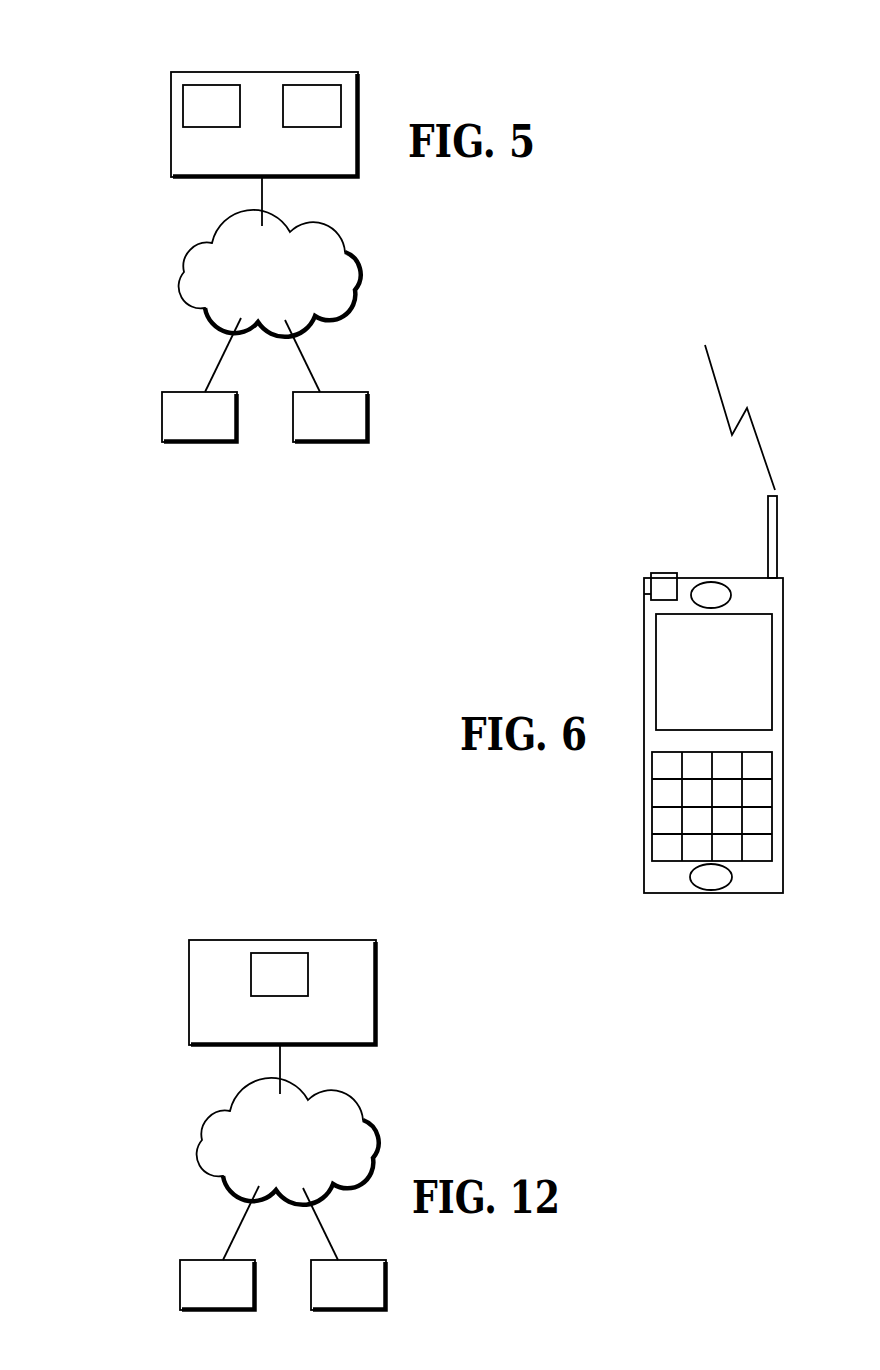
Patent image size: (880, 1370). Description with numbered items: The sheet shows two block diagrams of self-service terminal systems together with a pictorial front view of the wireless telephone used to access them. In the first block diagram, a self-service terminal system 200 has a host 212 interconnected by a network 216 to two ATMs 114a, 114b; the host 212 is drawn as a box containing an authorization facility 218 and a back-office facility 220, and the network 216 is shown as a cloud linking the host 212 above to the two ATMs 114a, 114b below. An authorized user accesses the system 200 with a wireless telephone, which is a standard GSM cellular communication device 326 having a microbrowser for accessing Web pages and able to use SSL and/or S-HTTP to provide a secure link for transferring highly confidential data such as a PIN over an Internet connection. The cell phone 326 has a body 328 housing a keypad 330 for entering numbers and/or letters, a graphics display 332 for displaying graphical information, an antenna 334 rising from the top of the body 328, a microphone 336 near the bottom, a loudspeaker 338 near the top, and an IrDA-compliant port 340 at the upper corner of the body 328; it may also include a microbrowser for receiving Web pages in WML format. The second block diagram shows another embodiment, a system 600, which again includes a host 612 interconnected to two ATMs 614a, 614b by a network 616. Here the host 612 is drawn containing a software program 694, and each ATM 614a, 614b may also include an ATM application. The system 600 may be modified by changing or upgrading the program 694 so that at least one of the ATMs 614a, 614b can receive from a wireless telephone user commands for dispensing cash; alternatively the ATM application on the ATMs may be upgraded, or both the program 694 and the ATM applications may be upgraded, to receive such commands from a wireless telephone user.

In FIG. 5, the self-service terminal system 200 is at (136, 217).
In FIG. 5, the host 212 is at (274, 72).
In FIG. 5, the authorization facility 218 is at (231, 119).
In FIG. 5, the back-office facility 220 is at (331, 119).
In FIG. 5, the network 216 is at (247, 289).
In FIG. 5, the ATM 114a is at (199, 417).
In FIG. 5, the ATM 114b is at (330, 417).
In FIG. 6, the communication device 326 is at (527, 647).
In FIG. 6, the body 328 is at (643, 820).
In FIG. 6, the keypad 330 is at (763, 822).
In FIG. 6, the graphics display 332 is at (762, 697).
In FIG. 6, the antenna 334 is at (778, 548).
In FIG. 6, the microphone 336 is at (707, 881).
In FIG. 6, the loudspeaker 338 is at (709, 590).
In FIG. 6, the IrDA-compliant port 340 is at (651, 590).
In FIG. 12, the system 600 is at (153, 1084).
In FIG. 12, the host 612 is at (282, 993).
In FIG. 12, the software program 694 is at (279, 974).
In FIG. 12, the network 616 is at (288, 1169).
In FIG. 12, the ATM 614a is at (217, 1285).
In FIG. 12, the ATM 614b is at (348, 1285).